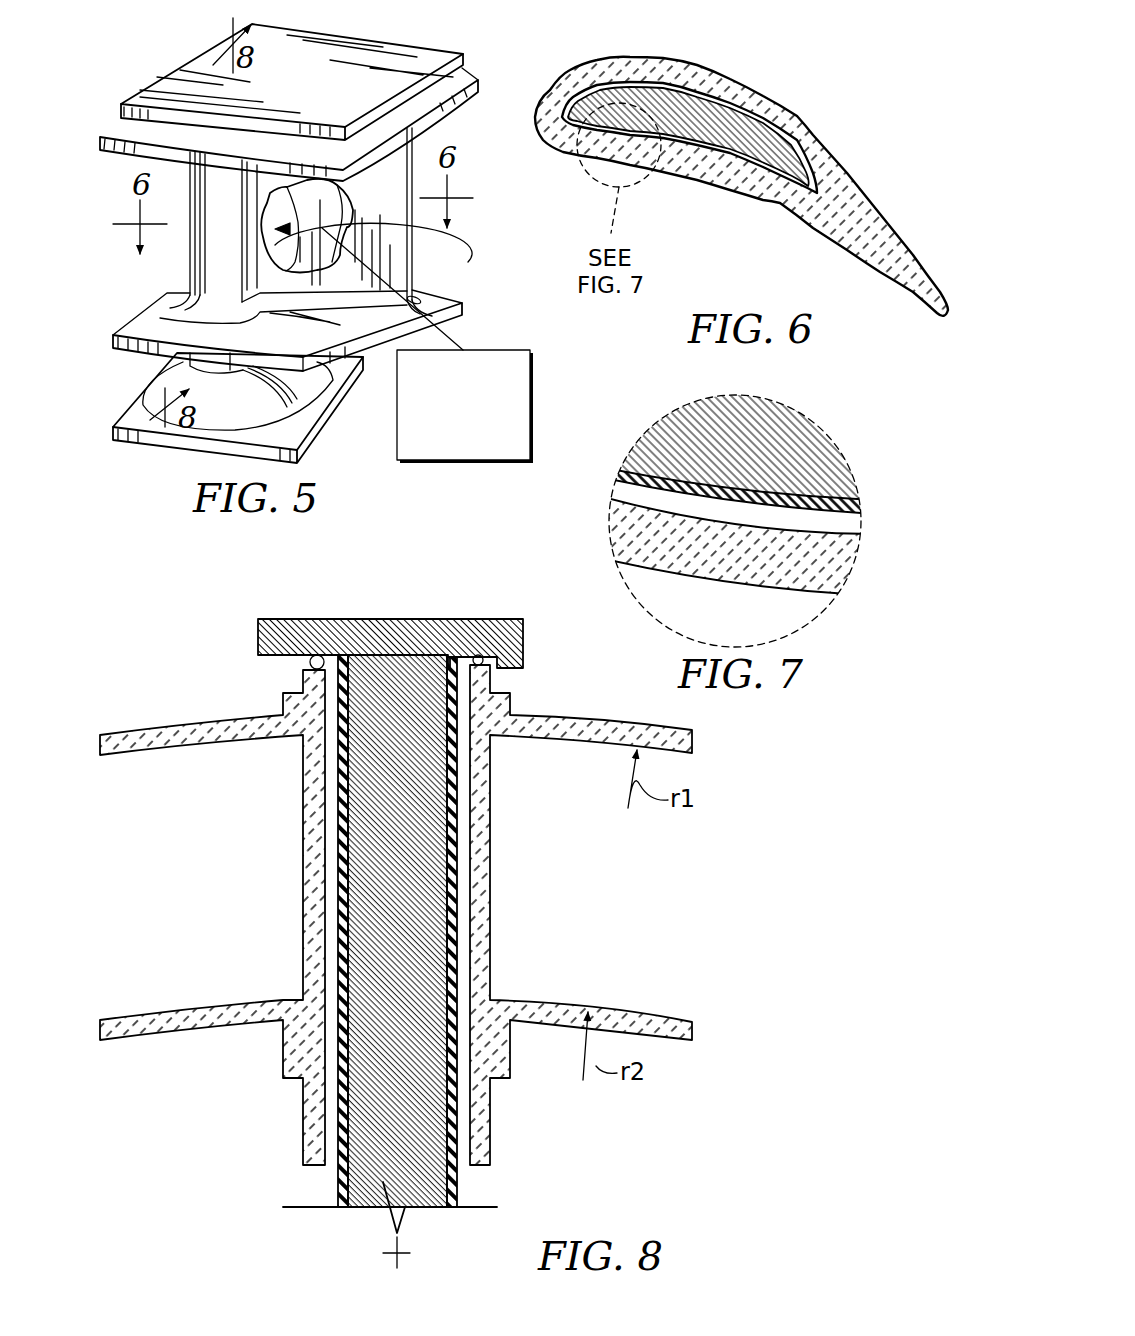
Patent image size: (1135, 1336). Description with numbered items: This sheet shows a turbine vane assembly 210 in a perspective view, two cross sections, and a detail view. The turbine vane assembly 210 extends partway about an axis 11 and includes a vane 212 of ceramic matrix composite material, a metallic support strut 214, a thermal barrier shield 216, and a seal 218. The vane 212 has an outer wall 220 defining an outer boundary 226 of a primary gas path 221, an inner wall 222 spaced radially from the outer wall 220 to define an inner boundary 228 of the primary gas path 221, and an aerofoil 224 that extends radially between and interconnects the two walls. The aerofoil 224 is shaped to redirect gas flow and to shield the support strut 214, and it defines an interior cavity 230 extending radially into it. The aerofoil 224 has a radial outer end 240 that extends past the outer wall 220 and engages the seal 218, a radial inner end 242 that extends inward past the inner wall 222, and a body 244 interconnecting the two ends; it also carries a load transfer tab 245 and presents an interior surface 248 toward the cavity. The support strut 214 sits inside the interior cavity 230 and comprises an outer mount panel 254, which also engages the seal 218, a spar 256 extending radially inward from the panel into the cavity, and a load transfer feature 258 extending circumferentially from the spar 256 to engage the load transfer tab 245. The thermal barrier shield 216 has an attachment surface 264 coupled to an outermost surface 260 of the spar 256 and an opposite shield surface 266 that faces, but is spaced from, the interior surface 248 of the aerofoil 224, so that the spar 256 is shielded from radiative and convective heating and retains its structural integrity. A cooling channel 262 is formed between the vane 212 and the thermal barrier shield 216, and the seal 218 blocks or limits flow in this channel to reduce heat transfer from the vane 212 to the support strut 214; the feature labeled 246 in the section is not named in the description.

In FIG. 5, the turbine vane assembly 210 is at (146, 50).
In FIG. 6, the turbine vane assembly 210 is at (592, 55).
In FIG. 7, the turbine vane assembly 210 is at (612, 403).
In FIG. 8, the turbine vane assembly 210 is at (209, 624).
In FIG. 5, the vane 212 is at (134, 266).
In FIG. 8, the vane 212 is at (202, 892).
In FIG. 5, the support strut 214 is at (118, 405).
In FIG. 5, the thermal barrier shield 216 is at (470, 350).
In FIG. 6, the thermal barrier shield 216 is at (718, 158).
In FIG. 7, the thermal barrier shield 216 is at (805, 519).
In FIG. 8, the thermal barrier shield 216 is at (459, 842).
In FIG. 8, the seal 218 is at (311, 656).
In FIG. 5, the outer wall 220 is at (444, 118).
In FIG. 8, the outer wall 220 is at (100, 737).
In FIG. 5, the primary gas path 221 is at (100, 335).
In FIG. 8, the primary gas path 221 is at (695, 1040).
In FIG. 5, the inner wall 222 is at (386, 343).
In FIG. 8, the inner wall 222 is at (100, 1023).
In FIG. 5, the aerofoil 224 is at (184, 256).
In FIG. 6, the aerofoil 224 is at (795, 115).
In FIG. 7, the aerofoil 224 is at (706, 584).
In FIG. 8, the aerofoil 224 is at (302, 913).
In FIG. 5, the outer boundary 226 is at (81, 142).
In FIG. 8, the outer boundary 226 is at (707, 750).
In FIG. 5, the inner boundary 228 is at (95, 340).
In FIG. 8, the inner boundary 228 is at (700, 1045).
In FIG. 8, the interior cavity 230 is at (374, 692).
In FIG. 8, the radial outer end 240 is at (282, 690).
In FIG. 8, the radial inner end 242 is at (302, 1106).
In FIG. 8, the body 244 is at (302, 829).
In FIG. 8, the load transfer tab 245 is at (490, 677).
In FIG. 7, the wall outer surface 246 is at (643, 572).
In FIG. 8, the wall outer surface 246 is at (302, 752).
In FIG. 7, the interior surface 248 is at (640, 506).
In FIG. 8, the interior surface 248 is at (333, 757).
In FIG. 5, the outer mount panel 254 is at (366, 80).
In FIG. 8, the outer mount panel 254 is at (469, 612).
In FIG. 5, the spar 256 is at (468, 262).
In FIG. 6, the spar 256 is at (793, 153).
In FIG. 7, the spar 256 is at (767, 424).
In FIG. 8, the spar 256 is at (458, 898).
In FIG. 8, the load transfer feature 258 is at (476, 655).
In FIG. 7, the outermost surface 260 is at (698, 488).
In FIG. 7, the cooling channel 262 is at (611, 477).
In FIG. 8, the cooling channel 262 is at (465, 1152).
In FIG. 7, the attachment surface 264 is at (808, 494).
In FIG. 8, the attachment surface 264 is at (466, 874).
In FIG. 7, the shield surface 266 is at (847, 514).
In FIG. 8, the shield surface 266 is at (448, 928).
In FIG. 8, the axis 11 is at (405, 1262).